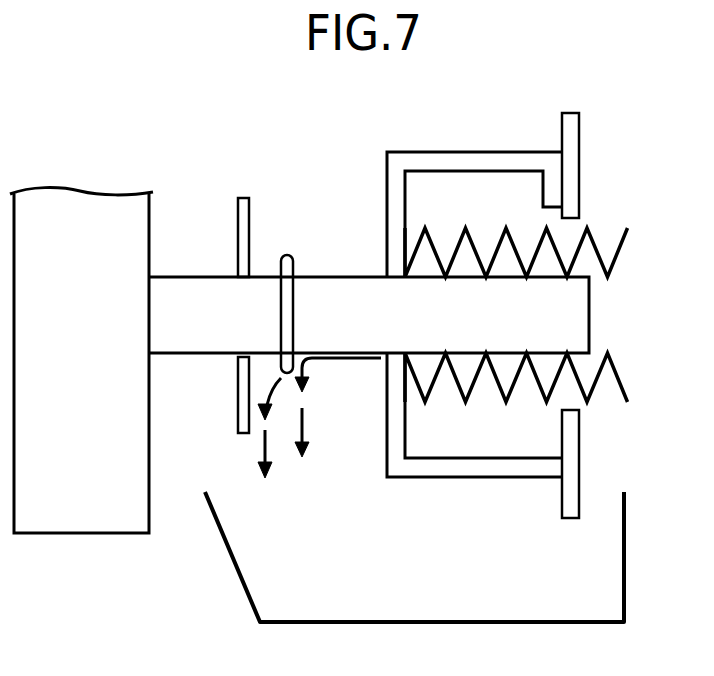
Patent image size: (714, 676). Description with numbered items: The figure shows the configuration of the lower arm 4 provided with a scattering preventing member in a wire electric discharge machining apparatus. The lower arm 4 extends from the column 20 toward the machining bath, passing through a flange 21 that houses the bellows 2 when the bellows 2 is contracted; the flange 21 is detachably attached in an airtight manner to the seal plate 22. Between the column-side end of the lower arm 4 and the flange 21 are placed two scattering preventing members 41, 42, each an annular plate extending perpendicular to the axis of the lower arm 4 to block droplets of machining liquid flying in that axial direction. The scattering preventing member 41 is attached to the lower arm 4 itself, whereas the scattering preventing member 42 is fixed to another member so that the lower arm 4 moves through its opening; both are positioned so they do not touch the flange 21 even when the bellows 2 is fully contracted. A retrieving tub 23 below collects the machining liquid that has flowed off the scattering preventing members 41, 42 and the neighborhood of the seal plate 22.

The column 20 is at (83, 535).
The lower arm 4 is at (186, 290).
The scattering preventing member 42 is at (243, 197).
The scattering preventing member 41 is at (290, 255).
The flange 21 is at (463, 152).
The seal plate 22 is at (582, 157).
The bellows 2 is at (623, 243).
The retrieving tub 23 is at (626, 558).